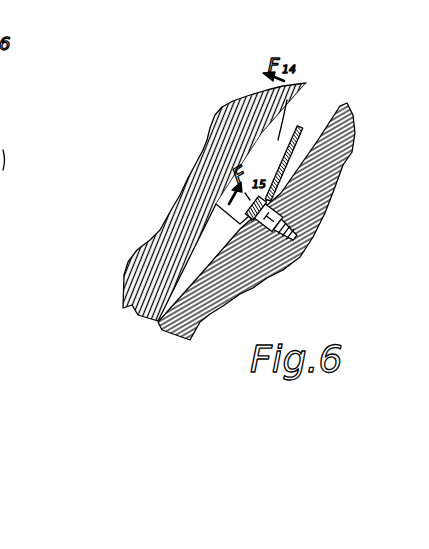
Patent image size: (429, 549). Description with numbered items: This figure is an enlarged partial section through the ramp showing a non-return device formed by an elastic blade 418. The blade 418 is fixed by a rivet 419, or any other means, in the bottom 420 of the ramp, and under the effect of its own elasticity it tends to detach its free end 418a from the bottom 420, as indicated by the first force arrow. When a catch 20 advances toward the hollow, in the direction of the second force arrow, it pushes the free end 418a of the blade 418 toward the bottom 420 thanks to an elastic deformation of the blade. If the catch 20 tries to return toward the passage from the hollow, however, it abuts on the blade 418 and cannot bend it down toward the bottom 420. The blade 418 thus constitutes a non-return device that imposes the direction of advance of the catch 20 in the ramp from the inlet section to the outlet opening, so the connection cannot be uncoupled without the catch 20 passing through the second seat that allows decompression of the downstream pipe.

The elastic blade 418 is at (265, 90).
The free end of the blade 418a is at (299, 124).
The rivet 419 is at (273, 230).
The bottom of the ramp 420 is at (314, 130).
The catch 20 is at (150, 307).